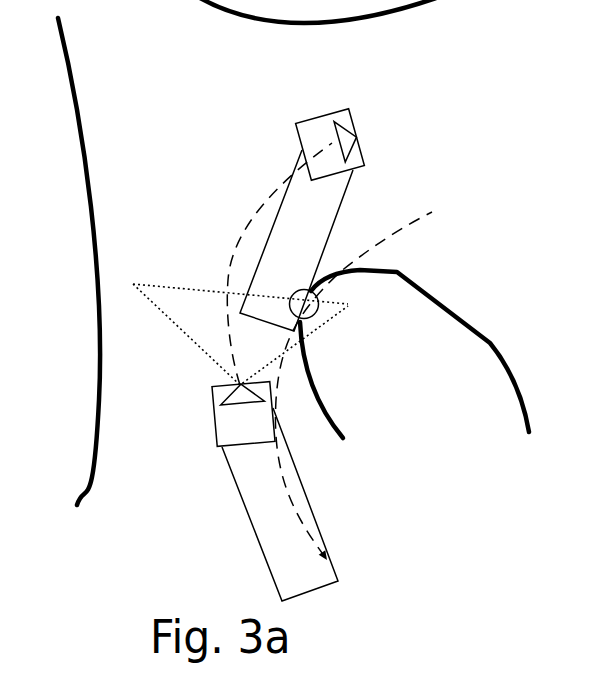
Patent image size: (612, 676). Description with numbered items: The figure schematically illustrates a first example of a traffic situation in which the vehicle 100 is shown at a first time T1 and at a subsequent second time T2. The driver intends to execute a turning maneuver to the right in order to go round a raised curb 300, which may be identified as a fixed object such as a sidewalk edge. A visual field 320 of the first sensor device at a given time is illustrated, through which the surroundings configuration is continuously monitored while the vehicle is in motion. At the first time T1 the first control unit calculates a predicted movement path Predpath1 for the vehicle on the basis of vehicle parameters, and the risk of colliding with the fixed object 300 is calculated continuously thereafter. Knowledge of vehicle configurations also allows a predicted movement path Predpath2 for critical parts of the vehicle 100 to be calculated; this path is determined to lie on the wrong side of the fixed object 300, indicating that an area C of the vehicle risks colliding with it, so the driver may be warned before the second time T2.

The vehicle 100 is at (200, 479).
The raised curb 300 is at (323, 397).
The visual field 320 is at (188, 292).
The first time T1 is at (257, 491).
The second time T2 is at (328, 220).
The area of the vehicle C is at (344, 302).
The predicted movement path Predpath1 is at (283, 175).
The predicted movement path for critical parts of the vehicle Predpath2 is at (403, 222).